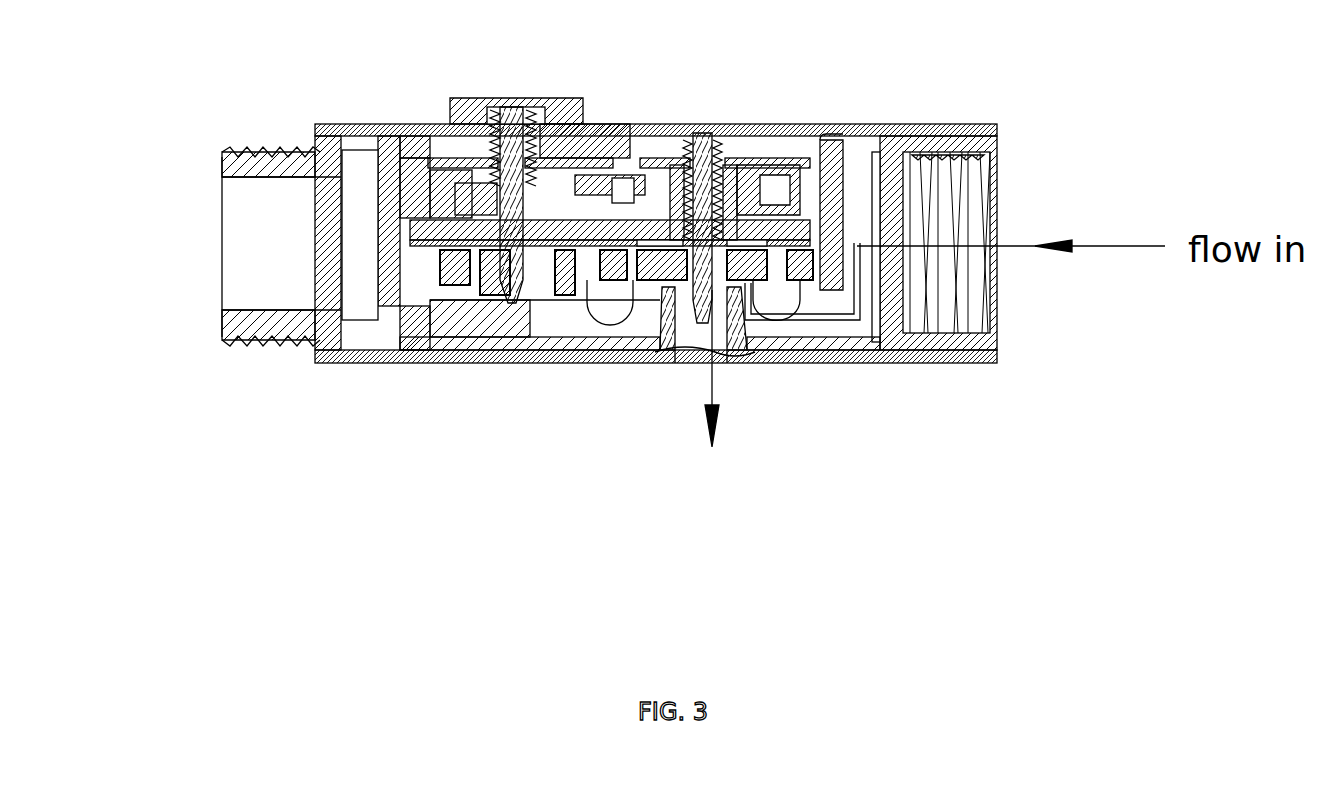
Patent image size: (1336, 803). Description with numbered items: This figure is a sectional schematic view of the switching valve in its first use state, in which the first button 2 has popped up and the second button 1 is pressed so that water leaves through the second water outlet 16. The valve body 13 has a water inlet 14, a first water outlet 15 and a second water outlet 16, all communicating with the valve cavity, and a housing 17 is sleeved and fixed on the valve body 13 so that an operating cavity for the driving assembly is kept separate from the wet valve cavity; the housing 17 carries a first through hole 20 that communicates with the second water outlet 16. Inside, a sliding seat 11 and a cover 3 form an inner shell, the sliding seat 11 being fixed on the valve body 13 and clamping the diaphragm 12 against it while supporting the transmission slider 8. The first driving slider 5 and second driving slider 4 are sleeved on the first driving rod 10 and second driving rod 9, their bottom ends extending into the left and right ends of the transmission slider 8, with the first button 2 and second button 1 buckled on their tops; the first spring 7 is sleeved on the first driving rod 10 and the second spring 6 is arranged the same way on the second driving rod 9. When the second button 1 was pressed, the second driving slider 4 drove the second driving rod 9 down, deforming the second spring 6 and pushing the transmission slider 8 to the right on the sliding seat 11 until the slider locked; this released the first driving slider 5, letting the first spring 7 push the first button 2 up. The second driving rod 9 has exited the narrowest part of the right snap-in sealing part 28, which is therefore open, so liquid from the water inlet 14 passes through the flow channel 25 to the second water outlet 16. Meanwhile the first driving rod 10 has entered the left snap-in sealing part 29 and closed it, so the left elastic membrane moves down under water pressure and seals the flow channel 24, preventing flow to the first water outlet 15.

The second button 1 is at (730, 190).
The first button 2 is at (490, 98).
The cover 3 is at (557, 190).
The second driving slider 4 is at (660, 200).
The first driving slider 5 is at (470, 130).
The second spring 6 is at (715, 175).
The first spring 7 is at (528, 102).
The transmission slider 8 is at (605, 195).
The second driving rod 9 is at (788, 160).
The first driving rod 10 is at (477, 177).
The sliding seat 11 is at (462, 290).
The diaphragm 12 is at (495, 295).
The valve body 13 is at (322, 148).
The water inlet 14 is at (998, 197).
The first water outlet 15 is at (235, 238).
The second water outlet 16 is at (718, 340).
The housing 17 is at (398, 157).
The first through hole 20 is at (690, 360).
The flow channel for the first water outlet 24 is at (373, 327).
The flow channel for the second water outlet 25 is at (832, 300).
The right snap-in sealing part 28 is at (763, 297).
The left snap-in sealing part 29 is at (567, 283).